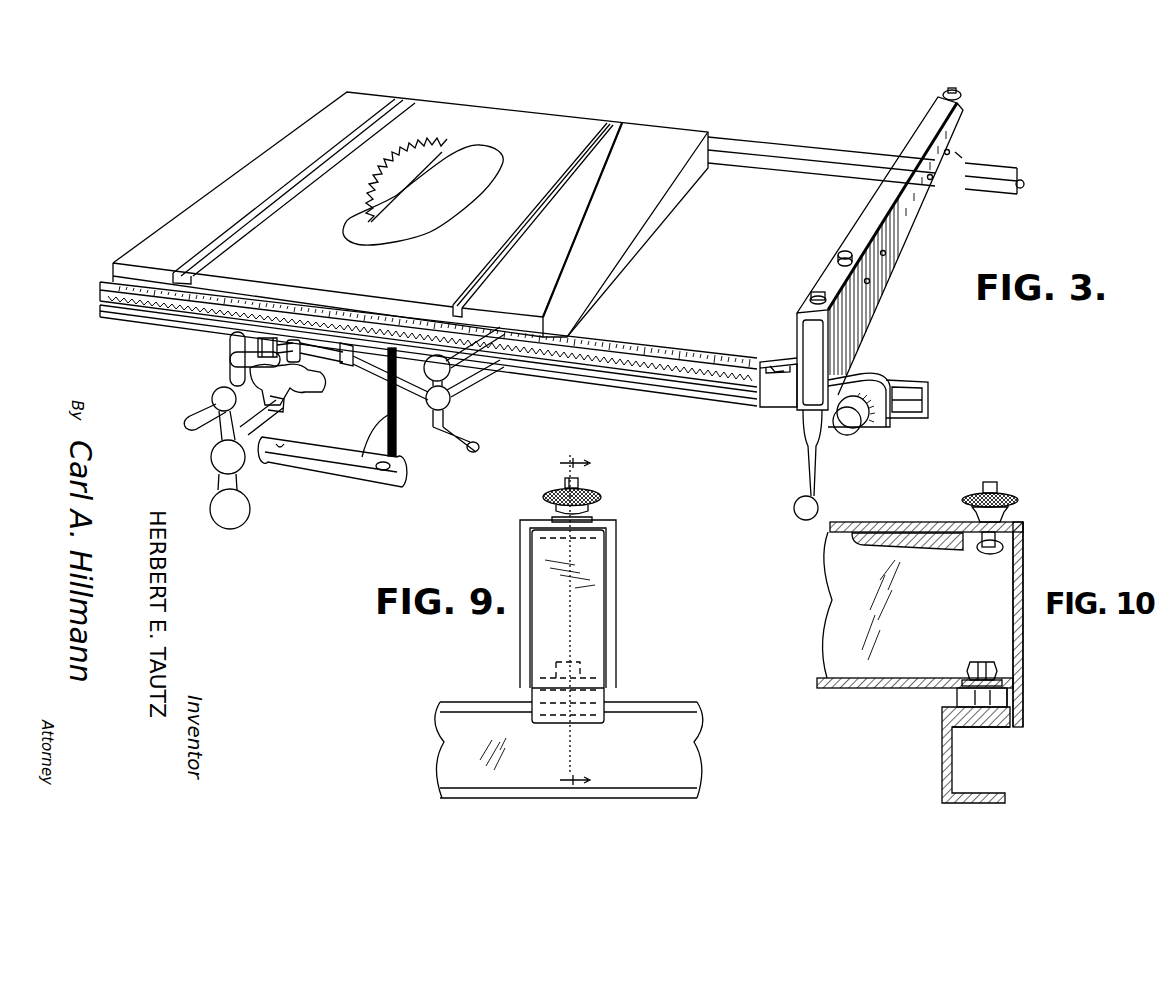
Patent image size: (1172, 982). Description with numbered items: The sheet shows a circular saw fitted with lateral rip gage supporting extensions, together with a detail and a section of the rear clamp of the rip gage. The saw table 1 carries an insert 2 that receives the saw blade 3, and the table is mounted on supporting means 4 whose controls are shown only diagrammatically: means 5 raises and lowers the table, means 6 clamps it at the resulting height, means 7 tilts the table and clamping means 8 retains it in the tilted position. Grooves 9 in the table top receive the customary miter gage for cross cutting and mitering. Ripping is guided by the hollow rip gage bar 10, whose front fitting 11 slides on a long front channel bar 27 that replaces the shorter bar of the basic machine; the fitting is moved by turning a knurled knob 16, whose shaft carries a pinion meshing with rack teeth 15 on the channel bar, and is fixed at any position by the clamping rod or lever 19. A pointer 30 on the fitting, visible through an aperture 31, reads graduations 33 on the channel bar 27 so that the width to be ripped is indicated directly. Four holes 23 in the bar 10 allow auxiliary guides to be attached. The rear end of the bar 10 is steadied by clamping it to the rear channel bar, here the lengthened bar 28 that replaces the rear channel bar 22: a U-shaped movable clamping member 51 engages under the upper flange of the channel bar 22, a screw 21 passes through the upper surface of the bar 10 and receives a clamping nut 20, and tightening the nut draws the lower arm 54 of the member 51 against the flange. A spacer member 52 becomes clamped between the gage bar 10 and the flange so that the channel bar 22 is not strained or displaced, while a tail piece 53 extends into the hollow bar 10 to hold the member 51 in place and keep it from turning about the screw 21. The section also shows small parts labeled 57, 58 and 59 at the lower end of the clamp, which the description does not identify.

In FIG. 3, the saw table 1 is at (520, 118).
In FIG. 3, the insert 2 is at (485, 161).
In FIG. 3, the saw blade 3 is at (424, 151).
In FIG. 3, the supporting means 4 is at (330, 480).
In FIG. 3, the means for raising and lowering the table 5 is at (212, 457).
In FIG. 3, the means for clamping the table 6 is at (230, 356).
In FIG. 3, the means for tilting the table 7 is at (450, 400).
In FIG. 3, the clamping means 8 is at (310, 392).
In FIG. 3, the grooves 9 is at (403, 102).
In FIG. 3, the rip gage 10 is at (908, 223).
In FIG. 9, the rip gage 10 is at (520, 538).
In FIG. 10, the rip gage 10 is at (878, 522).
In FIG. 3, the front fitting 11 is at (873, 378).
In FIG. 3, the rack teeth 15 is at (140, 297).
In FIG. 3, the knurled knob 16 is at (858, 430).
In FIG. 3, the clamping rod or lever 19 is at (805, 458).
In FIG. 3, the clamping nut 20 is at (943, 94).
In FIG. 9, the clamping nut 20 is at (604, 492).
In FIG. 10, the clamping nut 20 is at (1018, 497).
In FIG. 3, the screw 21 is at (958, 92).
In FIG. 9, the screw 21 is at (565, 484).
In FIG. 10, the screw 21 is at (990, 481).
In FIG. 9, the channel bar 22 is at (455, 722).
In FIG. 10, the channel bar 22 is at (942, 752).
In FIG. 3, the holes 23 is at (869, 283).
In FIG. 3, the channel bar 27 is at (928, 395).
In FIG. 3, the channel bar 28 is at (1003, 168).
In FIG. 3, the pointer 30 is at (777, 366).
In FIG. 3, the aperture 31 is at (790, 366).
In FIG. 3, the graduations 33 is at (623, 348).
In FIG. 9, the U-shaped movable clamping member 51 is at (590, 612).
In FIG. 10, the U-shaped movable clamping member 51 is at (1024, 572).
In FIG. 3, the spacer member 52 is at (958, 158).
In FIG. 10, the spacer member 52 is at (957, 698).
In FIG. 10, the tail piece 53 is at (872, 547).
In FIG. 10, the lower arm 54 is at (990, 728).
In FIG. 10, the nut 57 is at (982, 661).
In FIG. 10, the washer 58 is at (966, 673).
In FIG. 9, the lip 59 is at (612, 688).
In FIG. 10, the lip 59 is at (1008, 698).